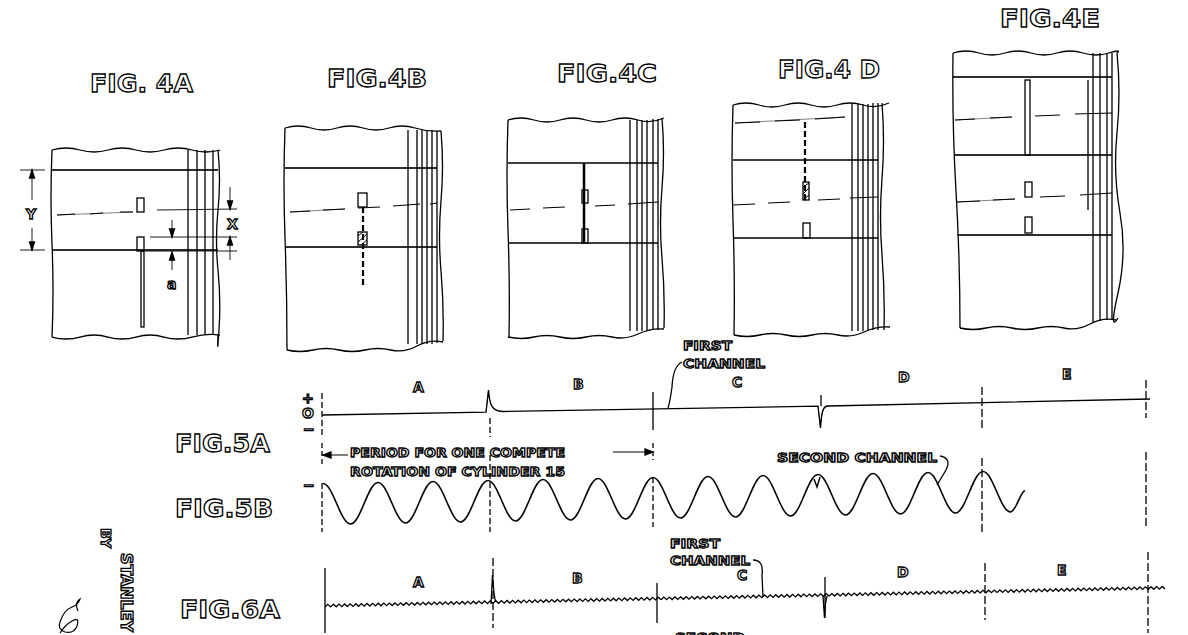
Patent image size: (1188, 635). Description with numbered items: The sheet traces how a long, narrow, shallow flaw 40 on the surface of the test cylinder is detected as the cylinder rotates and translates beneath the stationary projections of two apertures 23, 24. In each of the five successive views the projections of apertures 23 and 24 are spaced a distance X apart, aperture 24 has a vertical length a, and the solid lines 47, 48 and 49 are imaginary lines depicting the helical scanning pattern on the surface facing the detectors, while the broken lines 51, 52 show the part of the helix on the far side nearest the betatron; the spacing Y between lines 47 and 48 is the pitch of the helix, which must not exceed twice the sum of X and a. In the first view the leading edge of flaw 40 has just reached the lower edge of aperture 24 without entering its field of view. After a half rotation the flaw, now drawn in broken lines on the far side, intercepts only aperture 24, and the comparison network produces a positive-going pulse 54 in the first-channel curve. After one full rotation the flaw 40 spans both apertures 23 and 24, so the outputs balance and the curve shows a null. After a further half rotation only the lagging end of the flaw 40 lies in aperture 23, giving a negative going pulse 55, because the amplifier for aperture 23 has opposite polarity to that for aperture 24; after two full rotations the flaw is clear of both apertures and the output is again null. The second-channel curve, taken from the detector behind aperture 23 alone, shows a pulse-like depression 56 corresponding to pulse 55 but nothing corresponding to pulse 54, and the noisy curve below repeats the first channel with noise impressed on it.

In FIG. 4A, the aperture 23 is at (139, 198).
In FIG. 4B, the aperture 23 is at (369, 198).
In FIG. 4C, the aperture 23 is at (590, 198).
In FIG. 4D, the aperture 23 is at (812, 193).
In FIG. 4E, the aperture 23 is at (1032, 188).
In FIG. 4A, the aperture 24 is at (144, 252).
In FIG. 4B, the aperture 24 is at (369, 240).
In FIG. 4C, the aperture 24 is at (590, 240).
In FIG. 4D, the aperture 24 is at (812, 229).
In FIG. 4E, the aperture 24 is at (1033, 226).
In FIG. 4A, the flaw 40 is at (144, 306).
In FIG. 4B, the flaw 40 is at (358, 268).
In FIG. 4C, the flaw 40 is at (583, 175).
In FIG. 4D, the flaw 40 is at (810, 142).
In FIG. 4E, the flaw 40 is at (1032, 100).
In FIG. 4A, the solid line 47 is at (72, 252).
In FIG. 4B, the solid line 47 is at (305, 248).
In FIG. 4E, the solid line 47 is at (980, 237).
In FIG. 4A, the solid line 48 is at (107, 172).
In FIG. 4B, the solid line 48 is at (320, 168).
In FIG. 4E, the solid line 48 is at (973, 156).
In FIG. 4E, the line 49 is at (997, 80).
In FIG. 4A, the broken line 51 is at (76, 218).
In FIG. 4B, the broken line 51 is at (337, 208).
In FIG. 4E, the broken line 51 is at (977, 204).
In FIG. 4D, the broken line 52 is at (766, 124).
In FIG. 4E, the broken line 52 is at (970, 122).
In FIG. 5A, the positive-going pulse 54 is at (492, 392).
In FIG. 5A, the negative going pulse 55 is at (823, 418).
In FIG. 5B, the pulse-like depression 56 is at (814, 488).